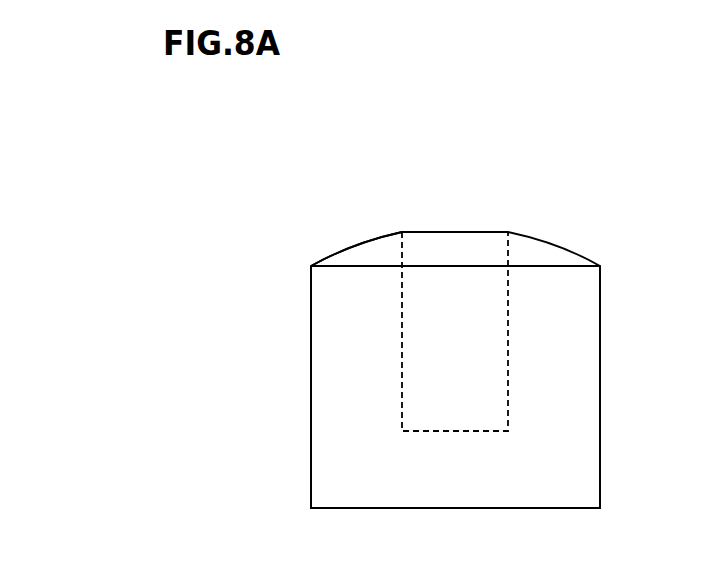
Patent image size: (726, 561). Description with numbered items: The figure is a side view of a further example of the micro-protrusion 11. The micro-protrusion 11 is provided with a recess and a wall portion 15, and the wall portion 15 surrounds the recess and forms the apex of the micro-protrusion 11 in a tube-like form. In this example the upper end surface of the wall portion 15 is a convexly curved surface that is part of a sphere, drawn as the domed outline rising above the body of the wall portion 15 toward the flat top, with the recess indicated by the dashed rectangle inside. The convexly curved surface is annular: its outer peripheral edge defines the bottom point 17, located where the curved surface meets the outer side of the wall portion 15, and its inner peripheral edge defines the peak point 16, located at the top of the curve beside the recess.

The micro-protrusion 11 is at (633, 242).
The wall portion 15 is at (311, 371).
The peak point 16 is at (403, 232).
The bottom point 17 is at (310, 266).